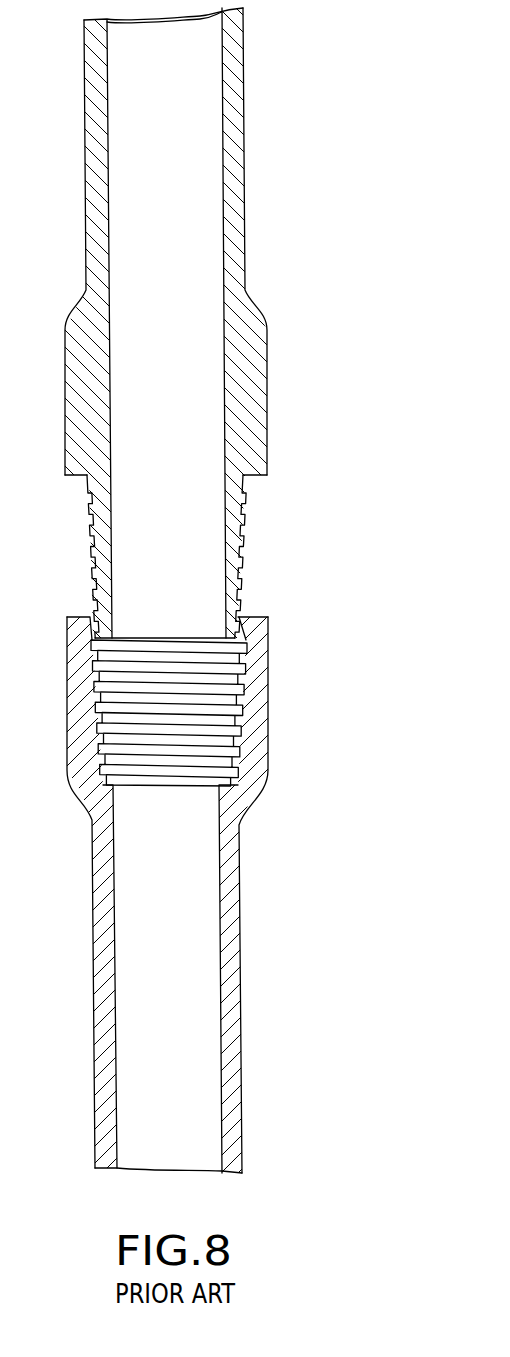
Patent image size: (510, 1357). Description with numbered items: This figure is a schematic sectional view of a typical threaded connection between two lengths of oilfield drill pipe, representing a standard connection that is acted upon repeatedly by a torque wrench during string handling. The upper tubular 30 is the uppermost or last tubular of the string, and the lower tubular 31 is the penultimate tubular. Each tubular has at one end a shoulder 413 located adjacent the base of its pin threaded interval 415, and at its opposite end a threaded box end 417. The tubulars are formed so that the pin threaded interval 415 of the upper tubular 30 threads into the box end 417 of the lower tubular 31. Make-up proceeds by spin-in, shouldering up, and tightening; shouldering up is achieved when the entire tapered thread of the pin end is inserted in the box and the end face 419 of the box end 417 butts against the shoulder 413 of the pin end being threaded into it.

The upper tubular 30 is at (287, 296).
The lower tubular 31 is at (290, 757).
The shoulder 413 is at (257, 482).
The pin threaded interval 415 is at (247, 500).
The box end 417 is at (245, 677).
The end face 419 is at (262, 617).